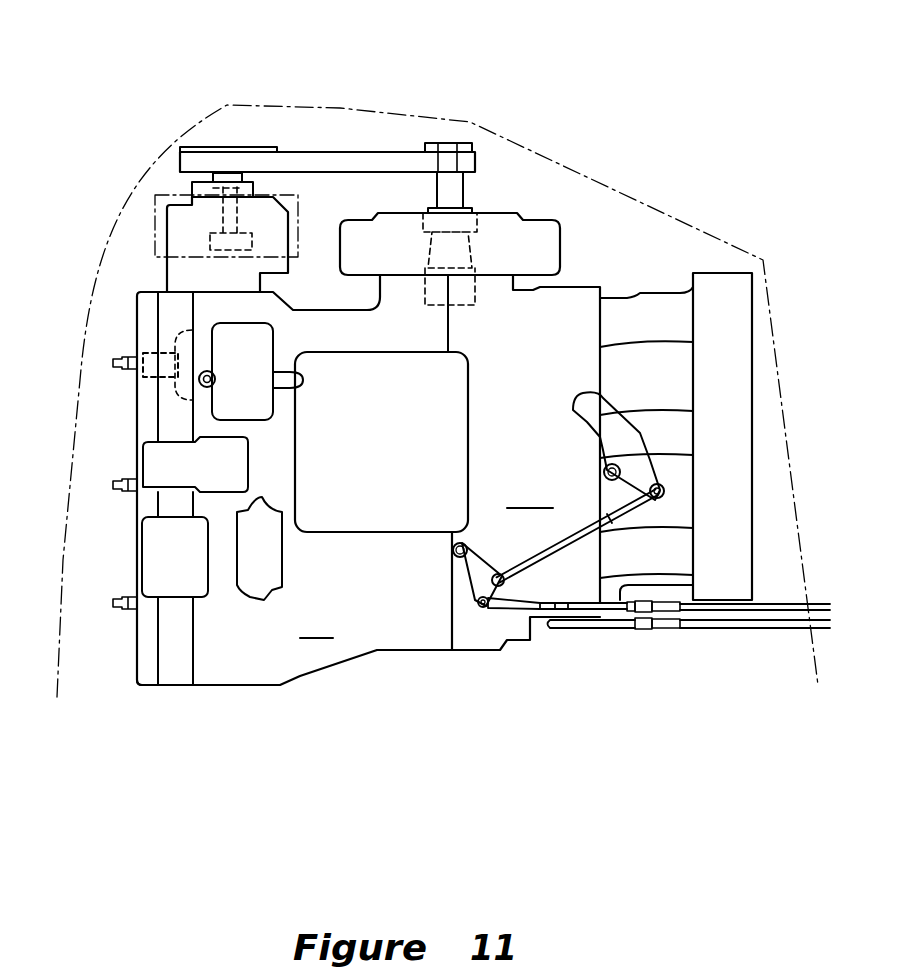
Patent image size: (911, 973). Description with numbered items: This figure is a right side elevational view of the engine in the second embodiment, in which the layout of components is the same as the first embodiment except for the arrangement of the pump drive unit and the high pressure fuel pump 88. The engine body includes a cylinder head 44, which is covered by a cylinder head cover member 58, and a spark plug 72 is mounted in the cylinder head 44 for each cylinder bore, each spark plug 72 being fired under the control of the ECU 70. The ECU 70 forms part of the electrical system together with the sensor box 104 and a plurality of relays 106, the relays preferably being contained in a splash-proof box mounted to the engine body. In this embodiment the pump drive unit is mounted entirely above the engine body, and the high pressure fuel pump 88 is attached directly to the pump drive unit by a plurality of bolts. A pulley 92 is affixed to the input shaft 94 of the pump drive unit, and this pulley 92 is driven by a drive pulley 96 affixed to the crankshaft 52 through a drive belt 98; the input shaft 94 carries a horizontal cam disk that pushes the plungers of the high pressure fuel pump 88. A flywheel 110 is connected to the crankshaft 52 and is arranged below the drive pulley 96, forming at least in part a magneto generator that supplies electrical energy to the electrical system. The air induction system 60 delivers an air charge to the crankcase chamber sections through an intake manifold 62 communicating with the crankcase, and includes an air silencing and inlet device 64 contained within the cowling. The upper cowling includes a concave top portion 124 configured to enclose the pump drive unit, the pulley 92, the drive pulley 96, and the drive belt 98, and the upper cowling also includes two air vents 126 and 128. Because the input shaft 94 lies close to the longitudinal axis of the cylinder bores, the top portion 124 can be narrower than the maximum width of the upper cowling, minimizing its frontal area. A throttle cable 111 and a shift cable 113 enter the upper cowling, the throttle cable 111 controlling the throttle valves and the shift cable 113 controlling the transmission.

The air induction system 60 is at (710, 122).
The concave top portion 124 is at (513, 120).
The cylinder head 44 is at (177, 637).
The cylinder head cover member 58 is at (155, 675).
The spark plug 72 is at (113, 364).
The relays 106 is at (248, 578).
The sensor box 104 is at (267, 402).
The ECU 70 is at (390, 520).
The air vent 128 is at (156, 179).
The air vent 126 is at (177, 193).
The high pressure fuel pump 88 is at (175, 238).
The input shaft 94 is at (222, 222).
The drive belt 98 is at (342, 158).
The pulley 92 is at (258, 147).
The drive pulley 96 is at (432, 142).
The flywheel 110 is at (560, 217).
The crankshaft 52 is at (480, 287).
The air silencing and inlet device 64 is at (725, 273).
The intake manifold 62 is at (635, 291).
The throttle cable 111 is at (783, 600).
The shift cable 113 is at (723, 630).